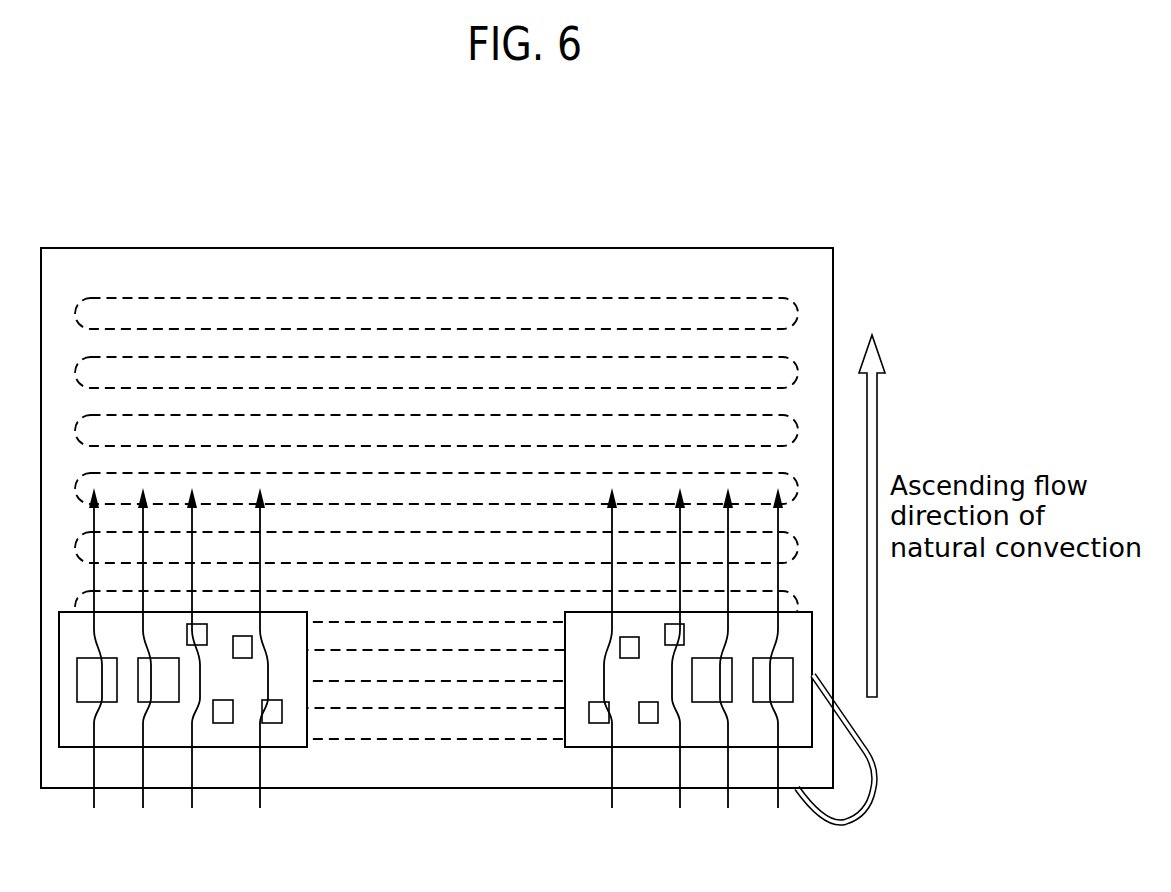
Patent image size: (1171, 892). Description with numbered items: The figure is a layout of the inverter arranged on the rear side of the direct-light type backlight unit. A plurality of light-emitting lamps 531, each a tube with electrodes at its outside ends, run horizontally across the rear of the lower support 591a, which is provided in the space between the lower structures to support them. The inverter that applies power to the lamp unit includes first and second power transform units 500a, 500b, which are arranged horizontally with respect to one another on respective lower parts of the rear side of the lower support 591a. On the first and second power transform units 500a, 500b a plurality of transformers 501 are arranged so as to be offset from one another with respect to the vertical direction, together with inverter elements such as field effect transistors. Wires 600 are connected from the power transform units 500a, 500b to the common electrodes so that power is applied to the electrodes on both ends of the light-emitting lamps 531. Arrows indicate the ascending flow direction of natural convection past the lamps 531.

The light-emitting lamps 531 is at (372, 298).
The lower support 591a is at (587, 248).
The first power transform unit 500a is at (285, 737).
The second power transform unit 500b is at (585, 737).
The transformers 501 is at (163, 693).
The wires 600 is at (847, 822).